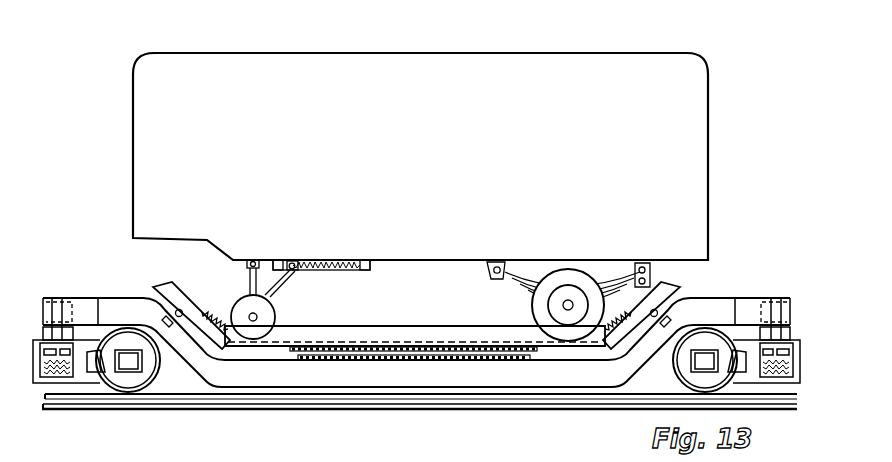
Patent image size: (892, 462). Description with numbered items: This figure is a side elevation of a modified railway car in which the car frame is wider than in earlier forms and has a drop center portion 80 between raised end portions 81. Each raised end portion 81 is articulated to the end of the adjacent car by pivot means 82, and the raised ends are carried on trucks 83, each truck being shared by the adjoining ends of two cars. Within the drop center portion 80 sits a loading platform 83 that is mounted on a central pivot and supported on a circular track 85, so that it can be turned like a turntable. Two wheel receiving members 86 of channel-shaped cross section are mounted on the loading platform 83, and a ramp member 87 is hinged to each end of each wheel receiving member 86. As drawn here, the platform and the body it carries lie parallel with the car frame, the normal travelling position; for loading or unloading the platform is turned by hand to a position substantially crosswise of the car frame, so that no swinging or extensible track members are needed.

The drop center portion 80 is at (416, 345).
The raised end portions 81 is at (106, 298).
The pivot means 82 is at (58, 296).
The loading platform 83 is at (383, 347).
The circular track 85 is at (445, 360).
The wheel receiving members 86 is at (452, 338).
The ramp member 87 is at (176, 278).